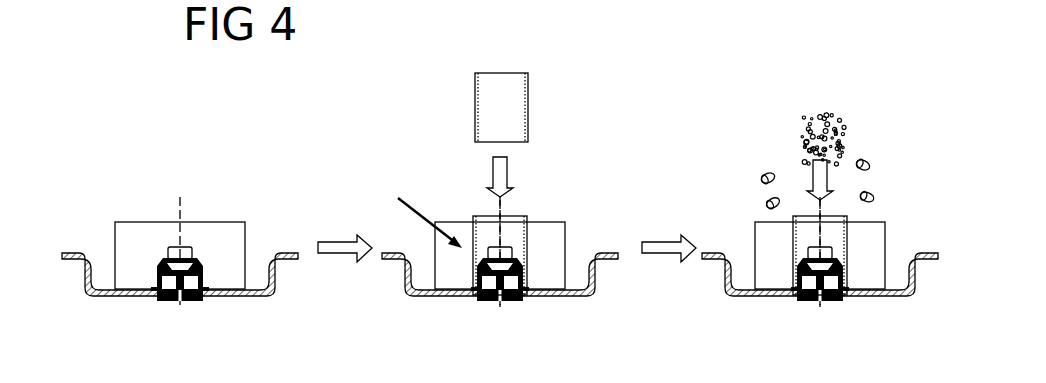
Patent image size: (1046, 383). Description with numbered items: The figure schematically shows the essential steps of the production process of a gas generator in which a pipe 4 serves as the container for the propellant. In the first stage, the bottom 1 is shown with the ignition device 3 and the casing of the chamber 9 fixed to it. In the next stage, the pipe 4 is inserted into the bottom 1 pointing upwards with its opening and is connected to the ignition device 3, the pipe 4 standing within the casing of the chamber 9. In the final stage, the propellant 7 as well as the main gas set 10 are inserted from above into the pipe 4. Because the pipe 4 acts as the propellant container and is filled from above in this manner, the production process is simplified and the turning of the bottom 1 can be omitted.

The bottom 1 is at (257, 297).
The ignition device 3 is at (207, 297).
The pipe 4 is at (530, 103).
The propellant 7 is at (838, 127).
The chamber 9 is at (217, 234).
The main gas set 10 is at (870, 161).